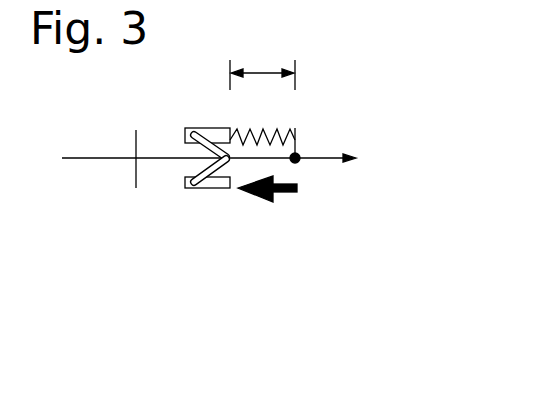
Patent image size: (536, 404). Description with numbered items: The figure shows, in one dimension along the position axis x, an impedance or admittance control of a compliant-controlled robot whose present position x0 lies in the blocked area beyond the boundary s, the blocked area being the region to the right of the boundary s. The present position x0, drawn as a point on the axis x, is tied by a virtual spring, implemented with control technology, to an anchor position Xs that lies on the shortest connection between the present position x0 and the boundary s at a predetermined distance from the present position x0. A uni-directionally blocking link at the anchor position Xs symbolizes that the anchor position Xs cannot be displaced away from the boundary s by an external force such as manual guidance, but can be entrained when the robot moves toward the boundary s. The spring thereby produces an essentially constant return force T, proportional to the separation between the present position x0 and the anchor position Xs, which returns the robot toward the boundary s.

The position x is at (217, 149).
The boundary s is at (139, 178).
The anchor position Xs is at (208, 145).
The present position x0 is at (279, 145).
The return force T is at (267, 205).